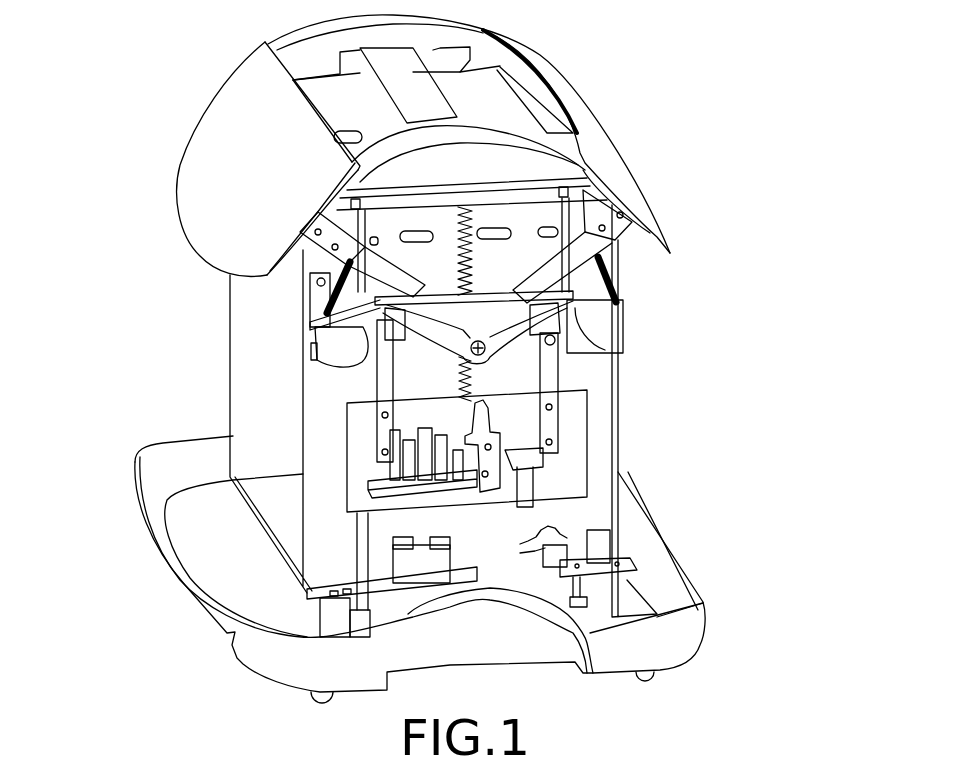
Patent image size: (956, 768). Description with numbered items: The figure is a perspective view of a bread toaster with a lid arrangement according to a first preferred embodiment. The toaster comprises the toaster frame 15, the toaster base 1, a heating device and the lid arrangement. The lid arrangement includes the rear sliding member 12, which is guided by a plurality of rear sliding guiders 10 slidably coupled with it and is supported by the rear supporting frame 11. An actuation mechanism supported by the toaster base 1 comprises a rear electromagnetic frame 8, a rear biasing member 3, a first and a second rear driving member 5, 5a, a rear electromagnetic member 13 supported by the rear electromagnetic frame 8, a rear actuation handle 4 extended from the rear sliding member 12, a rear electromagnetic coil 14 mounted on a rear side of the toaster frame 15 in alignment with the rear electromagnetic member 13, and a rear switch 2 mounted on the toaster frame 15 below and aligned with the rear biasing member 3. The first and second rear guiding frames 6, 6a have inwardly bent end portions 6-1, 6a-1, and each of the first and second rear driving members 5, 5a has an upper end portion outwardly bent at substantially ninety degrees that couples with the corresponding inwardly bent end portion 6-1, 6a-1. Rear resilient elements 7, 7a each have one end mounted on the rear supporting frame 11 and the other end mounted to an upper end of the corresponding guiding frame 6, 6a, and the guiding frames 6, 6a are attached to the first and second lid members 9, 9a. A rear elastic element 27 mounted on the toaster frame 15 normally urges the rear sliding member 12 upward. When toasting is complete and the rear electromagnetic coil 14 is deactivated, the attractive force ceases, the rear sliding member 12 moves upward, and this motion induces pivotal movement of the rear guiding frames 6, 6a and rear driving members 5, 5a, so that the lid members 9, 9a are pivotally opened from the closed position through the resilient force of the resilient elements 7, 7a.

The toaster base 1 is at (697, 583).
The rear switch 2 is at (560, 527).
The rear biasing member 3 is at (540, 480).
The rear actuation handle 4 is at (485, 450).
The first rear driving member 5 is at (383, 407).
The second rear driving member 5a is at (545, 370).
The first rear guiding frame 6 is at (373, 277).
The second rear guiding frame 6a is at (585, 255).
The inwardly bent end portion 6-1 is at (330, 325).
The inwardly bent end portion 6a-1 is at (570, 313).
The rear resilient element 7 is at (370, 278).
The rear resilient element 7a is at (608, 290).
The rear electromagnetic frame 8 is at (390, 442).
The first lid member 9 is at (275, 130).
The second lid member 9a is at (602, 147).
The rear sliding guider 10 is at (325, 212).
The rear supporting frame 11 is at (330, 352).
The rear sliding member 12 is at (353, 467).
The rear electromagnetic member 13 is at (368, 483).
The rear electromagnetic coil 14 is at (307, 593).
The toaster frame 15 is at (290, 530).
The rear elastic element 27 is at (465, 257).